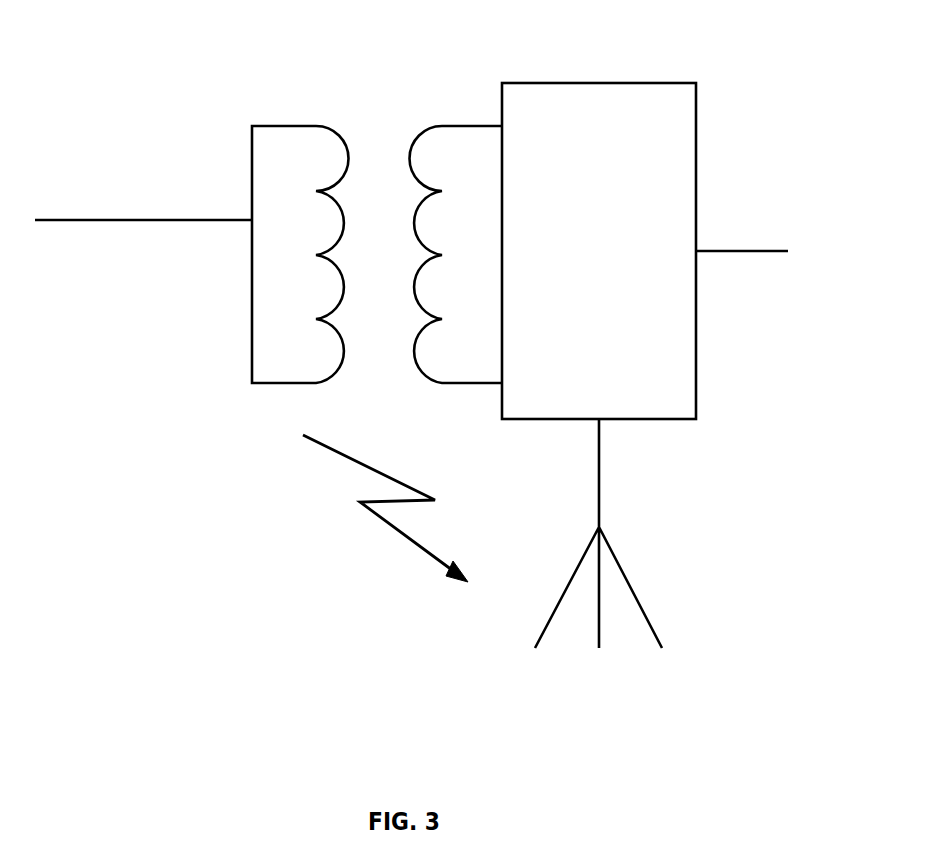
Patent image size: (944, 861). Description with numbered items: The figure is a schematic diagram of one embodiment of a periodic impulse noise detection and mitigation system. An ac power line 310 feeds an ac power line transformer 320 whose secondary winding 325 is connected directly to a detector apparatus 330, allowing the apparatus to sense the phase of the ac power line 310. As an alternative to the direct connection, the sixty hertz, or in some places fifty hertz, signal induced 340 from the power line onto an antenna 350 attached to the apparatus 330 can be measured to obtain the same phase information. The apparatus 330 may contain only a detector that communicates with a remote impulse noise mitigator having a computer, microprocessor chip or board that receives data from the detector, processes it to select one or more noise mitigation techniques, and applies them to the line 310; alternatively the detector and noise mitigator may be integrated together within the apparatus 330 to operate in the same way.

The ac power line 310 is at (173, 219).
The ac power line transformer 320 is at (376, 108).
The secondary winding 325 is at (453, 125).
The detector apparatus 330 is at (652, 83).
The induced signal 340 is at (340, 457).
The antenna 350 is at (630, 585).